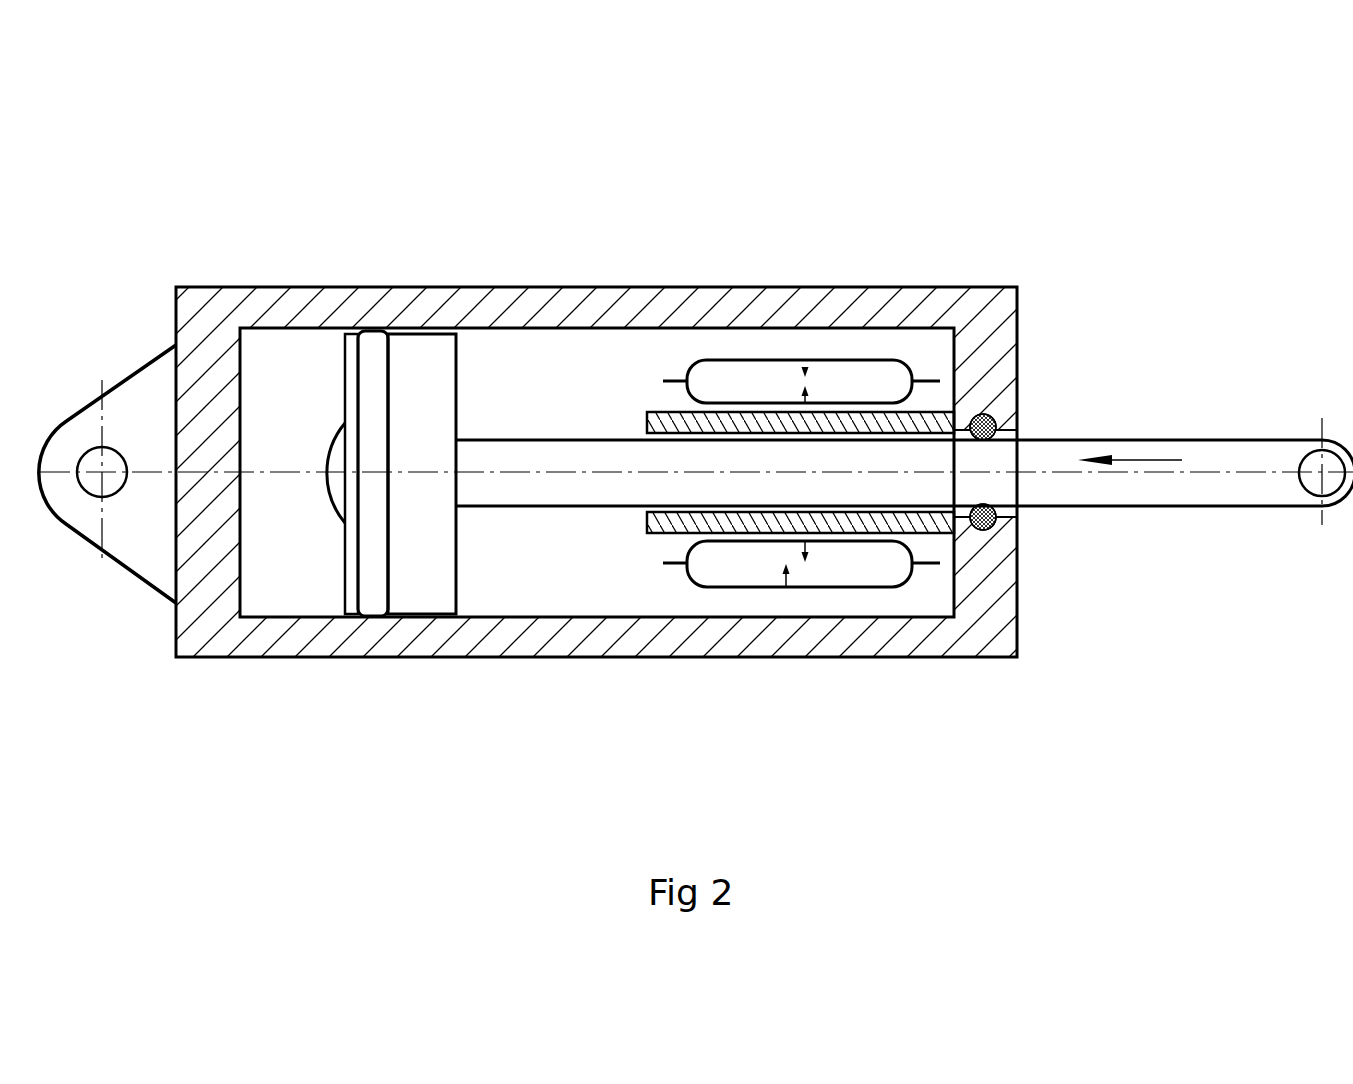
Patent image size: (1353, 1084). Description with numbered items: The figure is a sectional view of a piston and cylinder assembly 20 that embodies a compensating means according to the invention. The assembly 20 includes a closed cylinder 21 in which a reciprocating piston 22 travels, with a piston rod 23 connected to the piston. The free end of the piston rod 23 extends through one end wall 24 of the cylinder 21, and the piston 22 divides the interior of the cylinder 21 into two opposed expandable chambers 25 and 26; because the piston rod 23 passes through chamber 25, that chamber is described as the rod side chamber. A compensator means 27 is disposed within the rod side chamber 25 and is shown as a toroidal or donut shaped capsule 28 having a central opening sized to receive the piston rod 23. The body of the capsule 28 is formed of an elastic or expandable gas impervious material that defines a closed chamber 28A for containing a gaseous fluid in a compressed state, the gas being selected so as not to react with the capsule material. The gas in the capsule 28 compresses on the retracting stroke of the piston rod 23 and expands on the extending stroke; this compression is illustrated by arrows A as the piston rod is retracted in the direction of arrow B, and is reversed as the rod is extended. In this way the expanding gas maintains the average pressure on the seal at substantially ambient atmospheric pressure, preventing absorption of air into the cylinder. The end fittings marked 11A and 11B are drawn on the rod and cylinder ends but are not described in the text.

The piston and cylinder assembly 20 is at (694, 460).
The closed cylinder 21 is at (267, 307).
The reciprocating piston 22 is at (345, 577).
The piston rod 23 is at (1240, 455).
The end wall 24 is at (1018, 380).
The rod side chamber 25 is at (522, 588).
The expandable chamber 26 is at (257, 568).
The compensator means 27 is at (902, 378).
The capsule 28 is at (690, 363).
The closed chamber 28A is at (870, 382).
The piston rod 11A is at (904, 508).
The mounting bracket 11B is at (177, 632).
The arrows A is at (805, 368).
The arrow B is at (1130, 458).